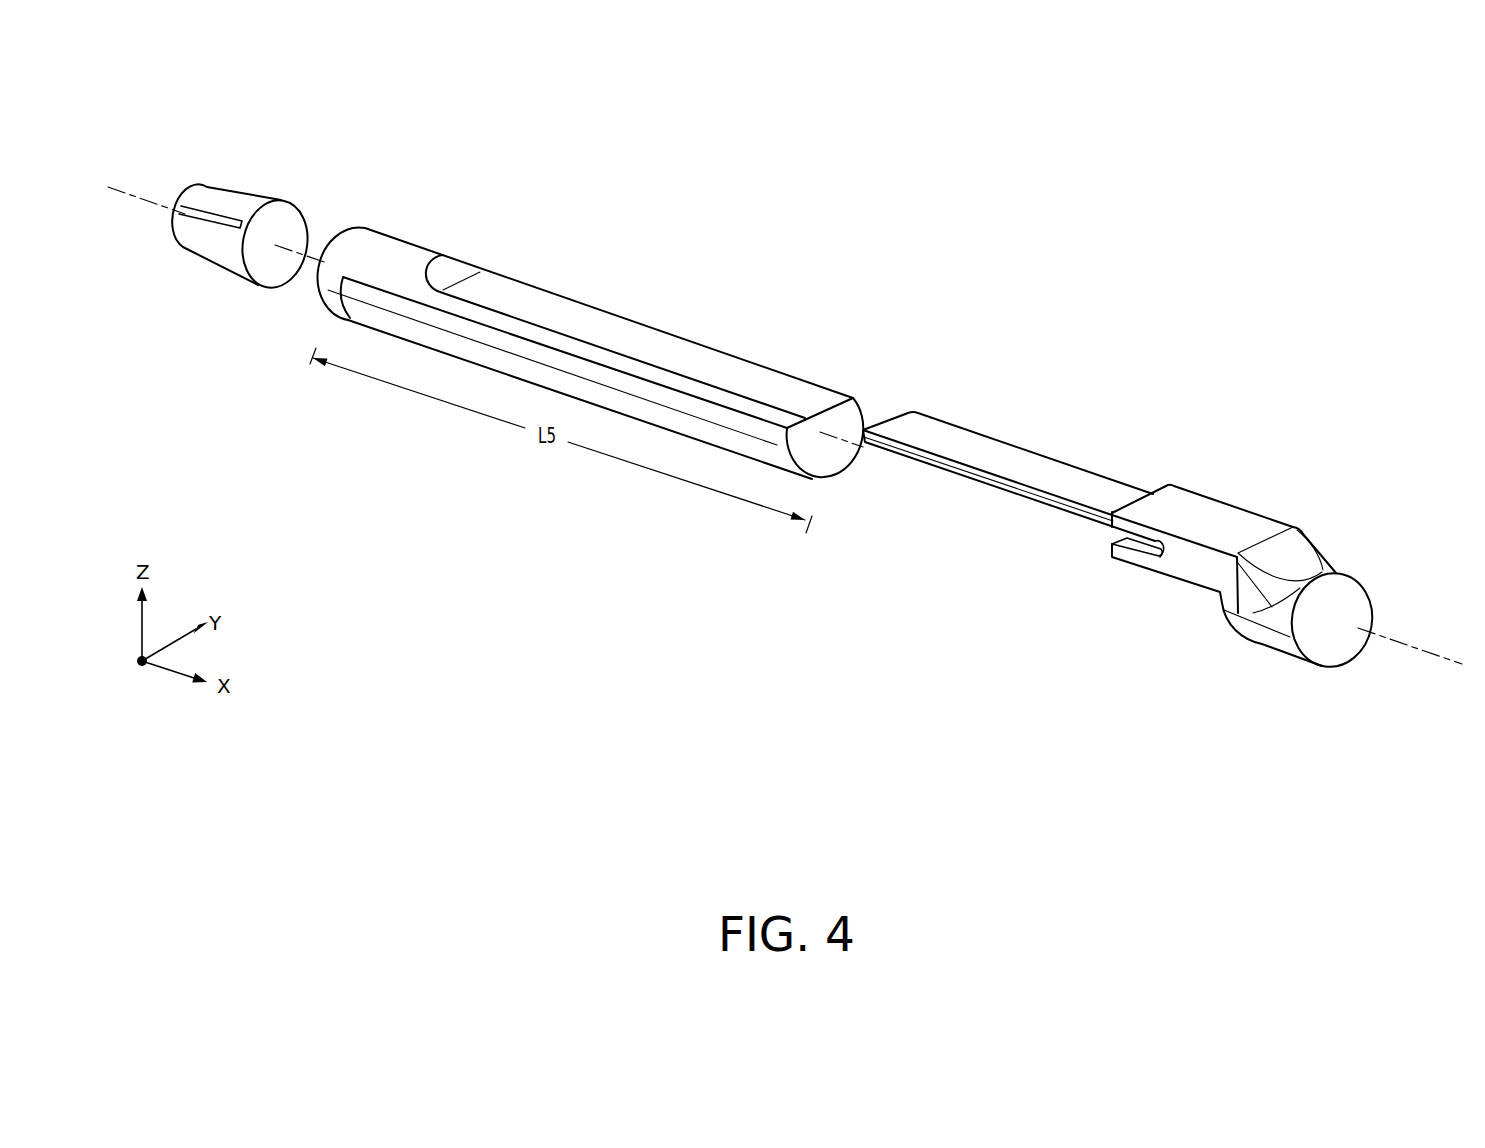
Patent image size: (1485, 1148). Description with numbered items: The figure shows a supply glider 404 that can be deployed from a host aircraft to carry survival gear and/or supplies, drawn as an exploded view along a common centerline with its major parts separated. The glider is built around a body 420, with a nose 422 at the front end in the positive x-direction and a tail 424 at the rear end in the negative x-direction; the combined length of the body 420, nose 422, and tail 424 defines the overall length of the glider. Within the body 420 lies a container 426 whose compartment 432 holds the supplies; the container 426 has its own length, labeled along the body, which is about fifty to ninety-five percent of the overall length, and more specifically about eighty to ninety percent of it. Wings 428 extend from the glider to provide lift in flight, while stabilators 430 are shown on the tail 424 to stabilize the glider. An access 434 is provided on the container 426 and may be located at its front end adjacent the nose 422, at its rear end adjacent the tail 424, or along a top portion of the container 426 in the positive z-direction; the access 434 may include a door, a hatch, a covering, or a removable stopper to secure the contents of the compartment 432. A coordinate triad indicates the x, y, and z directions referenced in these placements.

The supply glider 404 is at (166, 136).
The body 420 is at (594, 393).
The nose 422 is at (1350, 595).
The tail 424 is at (268, 209).
The container 426 is at (712, 440).
The wings 428 is at (928, 427).
The stabilators 430 is at (218, 210).
The compartment 432 is at (606, 332).
The access 434 is at (823, 467).